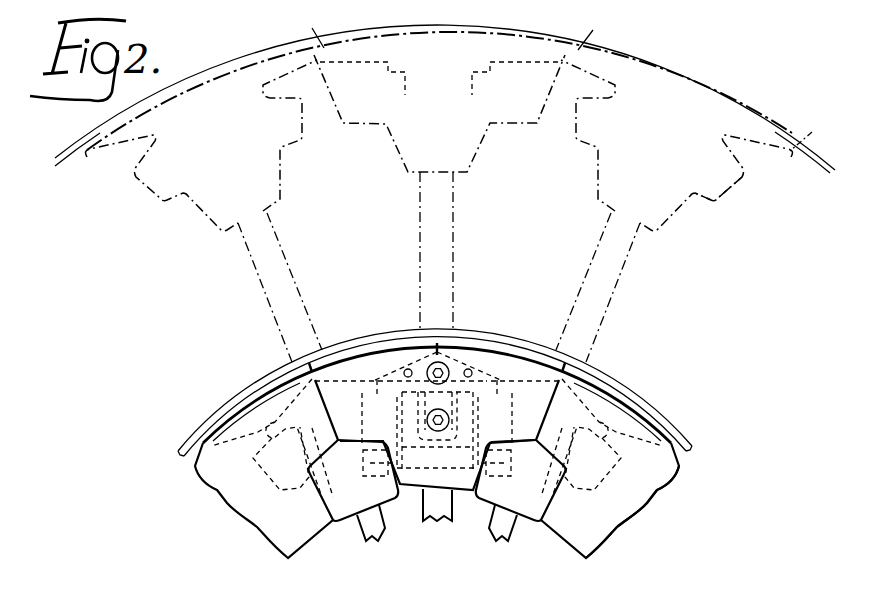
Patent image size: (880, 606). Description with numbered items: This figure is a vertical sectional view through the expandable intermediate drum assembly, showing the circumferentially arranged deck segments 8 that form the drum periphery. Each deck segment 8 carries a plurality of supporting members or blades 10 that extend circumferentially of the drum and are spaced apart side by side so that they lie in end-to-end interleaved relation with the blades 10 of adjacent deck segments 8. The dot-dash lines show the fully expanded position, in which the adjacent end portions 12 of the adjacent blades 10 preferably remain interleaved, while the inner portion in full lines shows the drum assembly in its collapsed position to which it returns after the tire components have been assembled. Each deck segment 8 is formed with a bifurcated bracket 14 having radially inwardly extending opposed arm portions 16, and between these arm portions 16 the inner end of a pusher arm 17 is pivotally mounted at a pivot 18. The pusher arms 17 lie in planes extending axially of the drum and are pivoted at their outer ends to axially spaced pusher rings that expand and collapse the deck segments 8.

The deck segment 8 is at (612, 540).
The blade 10 is at (673, 200).
The adjacent end portion 12 is at (445, 233).
The bifurcated bracket 14 is at (470, 406).
The arm portion 16 is at (474, 484).
The pusher arm 17 is at (490, 522).
The pivot mounting 18 is at (480, 425).